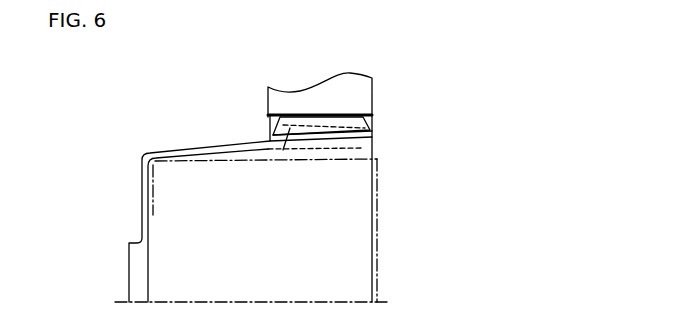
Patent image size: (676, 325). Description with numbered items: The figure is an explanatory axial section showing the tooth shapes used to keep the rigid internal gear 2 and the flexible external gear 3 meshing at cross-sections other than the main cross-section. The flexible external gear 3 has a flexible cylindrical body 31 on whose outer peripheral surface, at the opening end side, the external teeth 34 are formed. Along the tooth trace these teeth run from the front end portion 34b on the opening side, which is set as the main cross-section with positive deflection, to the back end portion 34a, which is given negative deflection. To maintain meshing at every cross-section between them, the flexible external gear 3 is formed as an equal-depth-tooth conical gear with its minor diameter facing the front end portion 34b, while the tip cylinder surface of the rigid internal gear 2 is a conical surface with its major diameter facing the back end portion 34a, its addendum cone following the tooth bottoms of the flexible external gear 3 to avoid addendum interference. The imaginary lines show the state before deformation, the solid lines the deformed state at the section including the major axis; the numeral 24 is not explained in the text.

The rigid internal gear 2 is at (373, 102).
The flexible external gear 3 is at (180, 148).
The center line of sealing portion 24 is at (303, 130).
The flexible cylindrical body 31 is at (236, 150).
The external teeth 34 is at (297, 123).
The back end portion 34a is at (270, 132).
The front end portion 34b is at (372, 118).